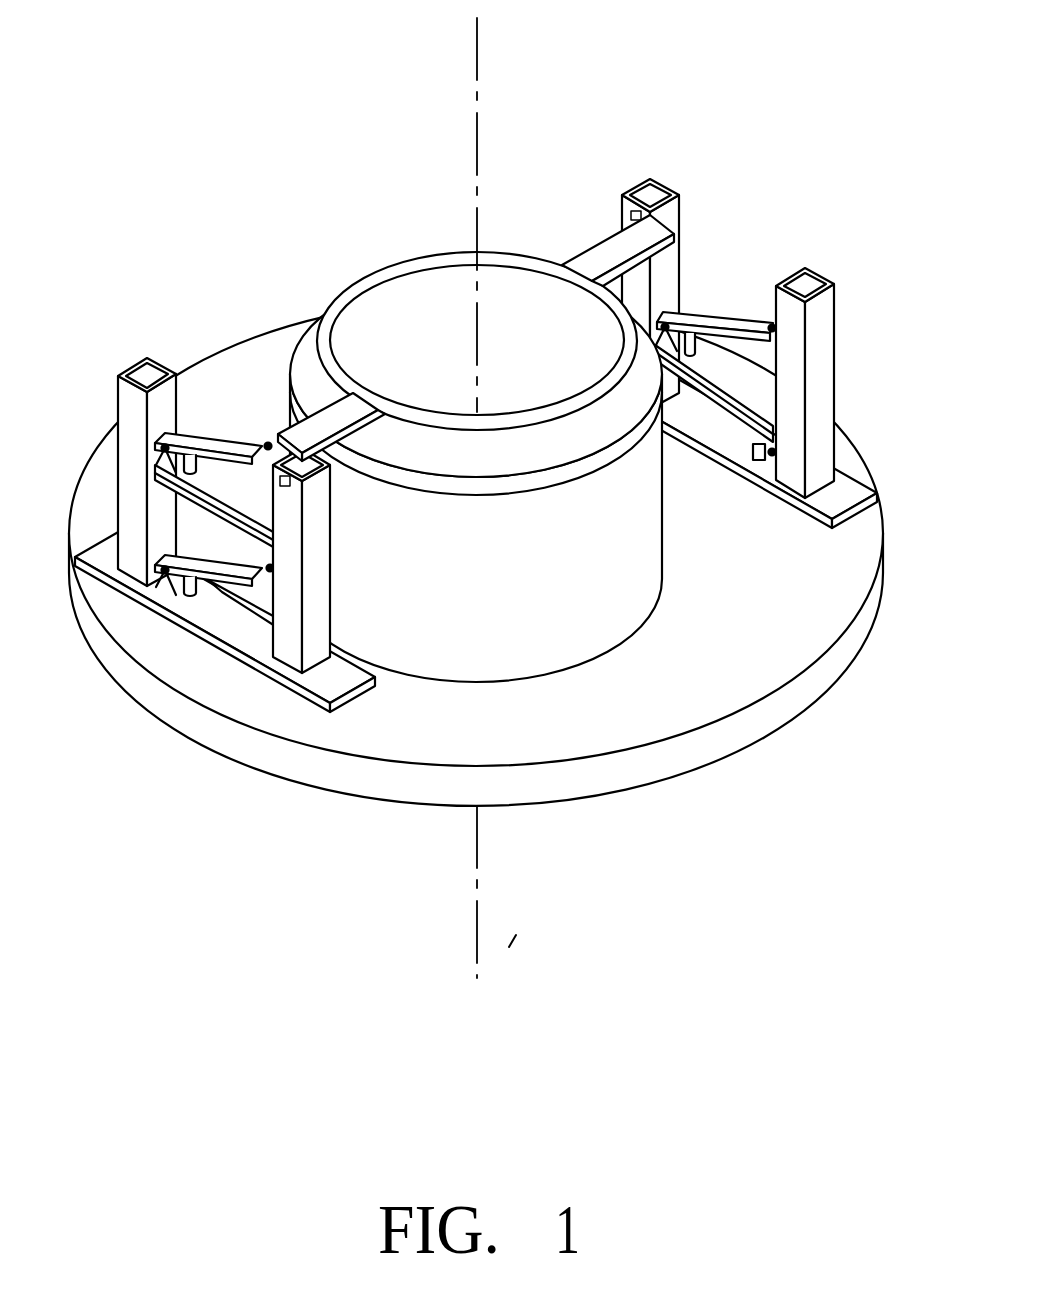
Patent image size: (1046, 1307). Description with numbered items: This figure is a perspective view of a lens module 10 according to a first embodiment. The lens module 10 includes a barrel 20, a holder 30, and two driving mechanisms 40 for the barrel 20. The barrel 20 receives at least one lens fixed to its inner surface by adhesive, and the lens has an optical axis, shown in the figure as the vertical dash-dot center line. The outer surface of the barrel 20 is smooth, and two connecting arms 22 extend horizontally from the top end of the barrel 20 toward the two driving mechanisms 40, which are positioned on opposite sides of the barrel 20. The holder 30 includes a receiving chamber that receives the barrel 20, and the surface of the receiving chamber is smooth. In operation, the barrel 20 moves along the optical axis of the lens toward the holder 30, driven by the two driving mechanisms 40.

The lens module 10 is at (503, 489).
The barrel 20 is at (372, 290).
The connecting arms 22 is at (604, 262).
The holder 30 is at (743, 662).
The driving mechanisms 40 is at (728, 267).